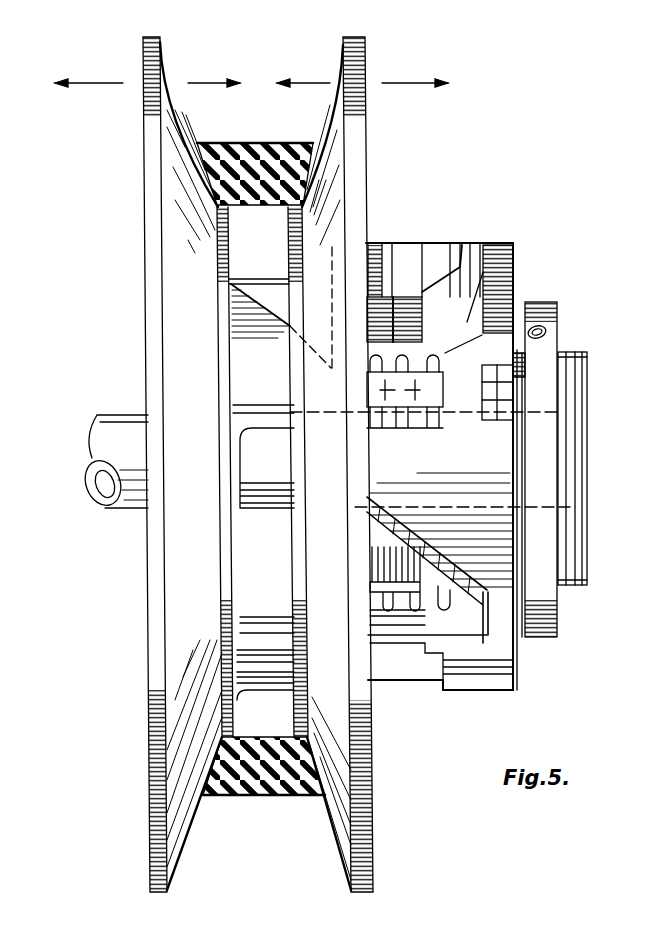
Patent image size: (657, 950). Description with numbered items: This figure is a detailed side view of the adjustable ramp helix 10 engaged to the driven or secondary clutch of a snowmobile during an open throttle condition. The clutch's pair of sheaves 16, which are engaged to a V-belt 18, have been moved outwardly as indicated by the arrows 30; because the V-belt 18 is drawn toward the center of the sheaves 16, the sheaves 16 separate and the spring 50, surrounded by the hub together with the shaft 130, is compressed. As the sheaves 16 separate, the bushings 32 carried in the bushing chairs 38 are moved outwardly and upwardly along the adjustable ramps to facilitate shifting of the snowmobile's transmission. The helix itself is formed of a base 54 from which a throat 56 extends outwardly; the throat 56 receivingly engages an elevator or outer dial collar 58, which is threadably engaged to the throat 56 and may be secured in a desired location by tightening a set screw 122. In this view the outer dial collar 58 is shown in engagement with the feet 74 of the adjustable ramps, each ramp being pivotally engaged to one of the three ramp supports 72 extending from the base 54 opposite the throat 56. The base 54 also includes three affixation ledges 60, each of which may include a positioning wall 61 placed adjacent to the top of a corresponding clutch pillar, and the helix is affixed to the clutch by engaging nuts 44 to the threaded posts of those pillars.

The adjustable ramp helix 10 is at (343, 72).
The sheaves 16 is at (172, 87).
The V-belt 18 is at (243, 160).
The arrows 30 is at (92, 83).
The bushings 32 is at (412, 297).
The bushing chairs 38 is at (384, 297).
The nut 44 is at (513, 388).
The spring 50 is at (530, 287).
The base 54 is at (513, 262).
The throat 56 is at (570, 493).
The outer dial collar 58 is at (548, 452).
The affixation ledges 60 is at (463, 297).
The positioning wall 61 is at (437, 645).
The ramp supports 72 is at (462, 245).
The feet 74 is at (577, 508).
The set screw 122 is at (548, 332).
The shaft 130 is at (133, 485).